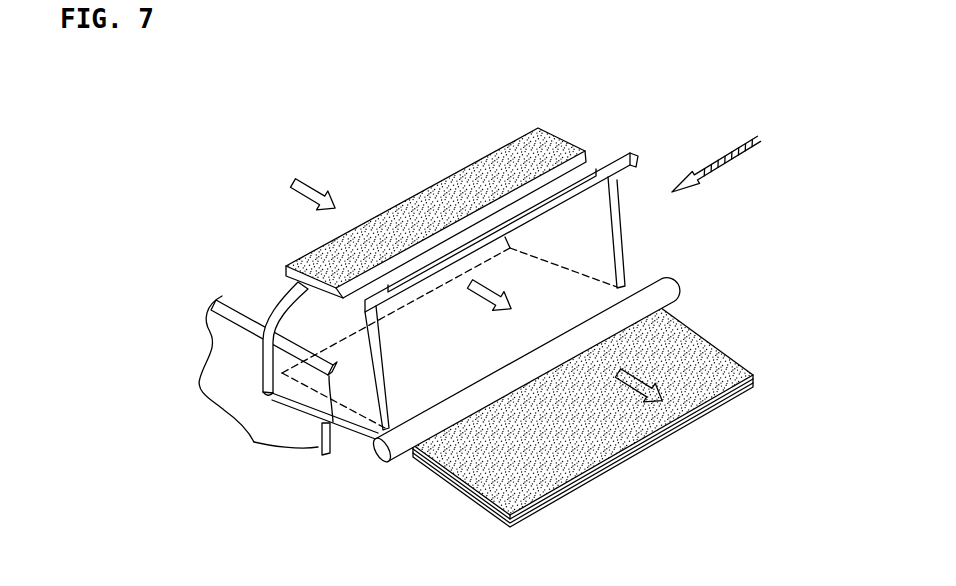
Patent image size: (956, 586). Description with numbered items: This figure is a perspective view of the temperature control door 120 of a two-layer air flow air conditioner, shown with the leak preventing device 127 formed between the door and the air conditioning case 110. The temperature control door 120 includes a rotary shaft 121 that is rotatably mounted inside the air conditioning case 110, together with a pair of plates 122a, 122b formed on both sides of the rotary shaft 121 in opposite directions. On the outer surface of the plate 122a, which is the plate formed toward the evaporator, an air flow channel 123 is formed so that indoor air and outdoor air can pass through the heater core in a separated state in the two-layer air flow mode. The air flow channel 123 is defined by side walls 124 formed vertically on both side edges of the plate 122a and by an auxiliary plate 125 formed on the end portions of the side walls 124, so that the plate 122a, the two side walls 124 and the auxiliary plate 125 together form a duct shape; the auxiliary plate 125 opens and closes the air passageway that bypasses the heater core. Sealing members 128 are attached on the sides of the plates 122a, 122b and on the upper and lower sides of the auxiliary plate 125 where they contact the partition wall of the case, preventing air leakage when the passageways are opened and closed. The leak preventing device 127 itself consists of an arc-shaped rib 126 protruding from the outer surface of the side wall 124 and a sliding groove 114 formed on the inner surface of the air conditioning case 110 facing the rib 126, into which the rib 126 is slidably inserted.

The air conditioning case 110 is at (212, 312).
The sliding groove 114 is at (262, 318).
The temperature control door 120 is at (728, 155).
The rotary shaft 121 is at (382, 450).
The plate 122a is at (428, 440).
The plate 122b is at (482, 507).
The air flow channel 123 is at (452, 258).
The side walls 124 is at (620, 244).
The auxiliary plate 125 is at (480, 227).
The arc-shaped rib 126 is at (287, 308).
The leak preventing device 127 is at (245, 215).
The sealing members 128 is at (545, 132).